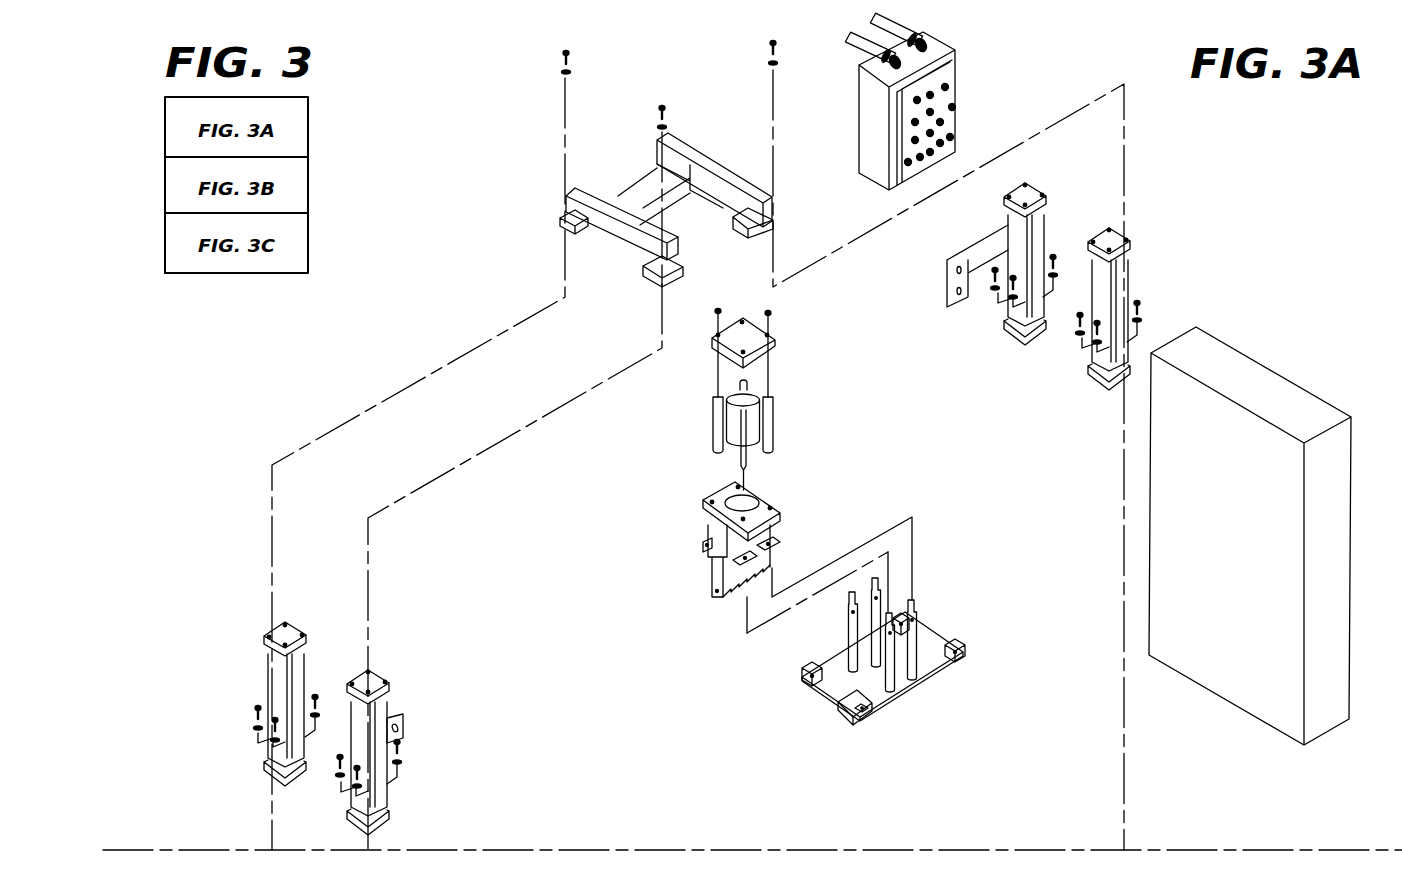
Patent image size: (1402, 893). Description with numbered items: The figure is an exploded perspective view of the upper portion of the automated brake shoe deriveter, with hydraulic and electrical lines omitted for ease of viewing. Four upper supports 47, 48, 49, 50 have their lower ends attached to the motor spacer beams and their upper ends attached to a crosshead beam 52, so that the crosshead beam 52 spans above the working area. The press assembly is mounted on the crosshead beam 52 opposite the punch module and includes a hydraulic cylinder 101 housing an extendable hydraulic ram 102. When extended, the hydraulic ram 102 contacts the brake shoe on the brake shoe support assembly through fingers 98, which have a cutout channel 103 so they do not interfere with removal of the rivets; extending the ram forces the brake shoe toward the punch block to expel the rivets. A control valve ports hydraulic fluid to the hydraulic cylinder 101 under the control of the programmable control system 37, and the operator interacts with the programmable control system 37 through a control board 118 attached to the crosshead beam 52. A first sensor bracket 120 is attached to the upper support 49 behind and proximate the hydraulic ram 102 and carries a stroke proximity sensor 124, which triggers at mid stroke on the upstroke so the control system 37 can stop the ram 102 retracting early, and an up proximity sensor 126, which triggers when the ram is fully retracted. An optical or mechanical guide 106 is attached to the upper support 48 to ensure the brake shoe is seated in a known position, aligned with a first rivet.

The programmable control system 37 is at (1299, 381).
The upper support 47 is at (268, 690).
The upper support 48 is at (387, 792).
The upper support 49 is at (1043, 237).
The upper support 50 is at (1125, 265).
The crosshead beam 52 is at (613, 195).
The fingers 98 is at (713, 577).
The hydraulic cylinder 101 is at (720, 493).
The hydraulic ram 102 is at (752, 443).
The cutout channel 103 is at (720, 597).
The optical or mechanical guide 106 is at (400, 712).
The control board 118 is at (957, 125).
The first sensor bracket 120 is at (978, 238).
The stroke proximity sensor 124 is at (957, 295).
The up proximity sensor 126 is at (956, 271).